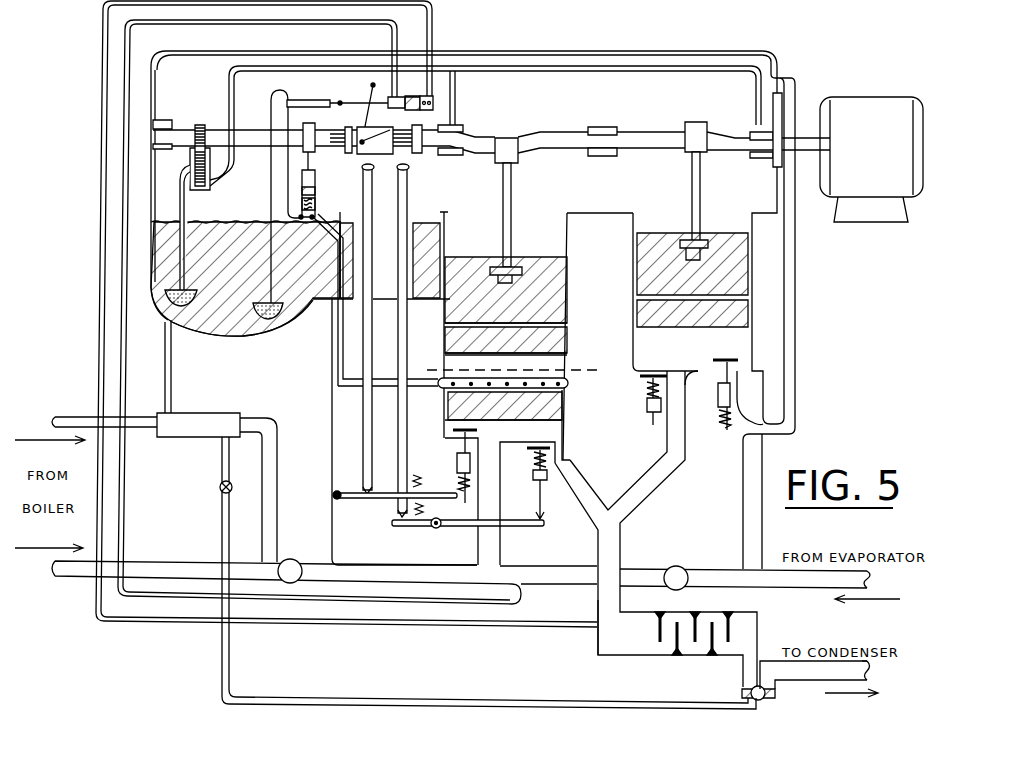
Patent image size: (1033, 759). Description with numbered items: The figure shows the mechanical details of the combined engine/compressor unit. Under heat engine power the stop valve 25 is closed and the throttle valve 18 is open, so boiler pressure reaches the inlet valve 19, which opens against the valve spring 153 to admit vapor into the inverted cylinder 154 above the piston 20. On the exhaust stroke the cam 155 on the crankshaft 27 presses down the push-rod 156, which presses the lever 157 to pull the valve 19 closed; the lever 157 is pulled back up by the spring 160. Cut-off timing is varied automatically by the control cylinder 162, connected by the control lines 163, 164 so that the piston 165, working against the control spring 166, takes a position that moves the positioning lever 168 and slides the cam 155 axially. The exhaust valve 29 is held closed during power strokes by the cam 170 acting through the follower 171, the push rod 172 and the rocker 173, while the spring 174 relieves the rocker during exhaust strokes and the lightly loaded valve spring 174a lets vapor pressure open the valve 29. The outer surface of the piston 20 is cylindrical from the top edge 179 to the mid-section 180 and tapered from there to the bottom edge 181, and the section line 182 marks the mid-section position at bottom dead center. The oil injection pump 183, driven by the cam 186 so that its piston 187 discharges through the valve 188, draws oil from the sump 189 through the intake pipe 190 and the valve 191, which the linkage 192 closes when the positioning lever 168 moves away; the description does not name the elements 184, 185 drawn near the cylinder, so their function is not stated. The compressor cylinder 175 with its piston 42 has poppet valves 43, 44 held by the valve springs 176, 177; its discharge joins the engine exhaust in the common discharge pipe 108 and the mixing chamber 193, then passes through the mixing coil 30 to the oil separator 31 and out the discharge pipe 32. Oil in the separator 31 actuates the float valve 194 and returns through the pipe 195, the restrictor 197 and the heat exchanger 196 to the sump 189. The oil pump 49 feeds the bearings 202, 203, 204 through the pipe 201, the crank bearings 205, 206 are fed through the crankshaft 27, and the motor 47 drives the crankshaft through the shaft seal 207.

The throttle valve 18 is at (293, 556).
The inlet valve 19 is at (445, 423).
The piston 20 is at (448, 308).
The stop valve 25 is at (688, 566).
The crankshaft 27 is at (638, 133).
The exhaust valve 29 is at (532, 461).
The mixing coil 30 is at (683, 658).
The oil separator 31 is at (737, 686).
The discharge pipe 32 is at (790, 689).
The piston 42 is at (745, 281).
The inlet valve 43 is at (738, 373).
The discharge valve 44 is at (638, 388).
The motor 47 is at (875, 95).
The oil pump 49 is at (190, 165).
The discharge pipe 108 is at (597, 602).
The valve spring 153 is at (460, 484).
The cylinder 154 is at (566, 437).
The cam 155 is at (368, 168).
The push-rod 156 is at (363, 194).
The lever 157 is at (362, 499).
The spring 160 is at (413, 476).
The control cylinder 162 is at (433, 100).
The control line 163 is at (396, 40).
The control line 164 is at (436, 42).
The piston 165 is at (407, 96).
The control spring 166 is at (434, 112).
The positioning lever 168 is at (366, 123).
The cam 170 is at (410, 166).
The cam follower 171 is at (412, 184).
The push rod 172 is at (418, 203).
The rocker 173 is at (521, 524).
The spring 174 is at (403, 528).
The valve spring 174a is at (558, 459).
The compressor cylinder 175 is at (755, 340).
The valve spring 176 is at (668, 375).
The valve spring 177 is at (712, 426).
The top edge 179 is at (572, 258).
The mid-section 180 is at (565, 350).
The bottom edge 181 is at (564, 413).
The section line 182 is at (588, 381).
The oil injection pump 183 is at (300, 183).
The pipe 184 is at (330, 351).
The distributor tube 185 is at (450, 395).
The cam 186 is at (314, 129).
The piston 187 is at (298, 197).
The valve 188 is at (322, 213).
The sump 189 is at (184, 326).
The intake pipe 190 is at (270, 112).
The valve 191 is at (296, 100).
The linkage 192 is at (350, 99).
The mixing chamber 193 is at (595, 647).
The float valve 194 is at (766, 704).
The pipe 195 is at (310, 697).
The heat exchanger 196 is at (210, 410).
The restrictor 197 is at (220, 489).
The pipe 201 is at (230, 80).
The bearing 202 is at (465, 128).
The bearing 203 is at (585, 126).
The bearing 204 is at (755, 128).
The crank bearing 205 is at (520, 163).
The crank bearing 206 is at (690, 152).
The shaft seal 207 is at (778, 118).